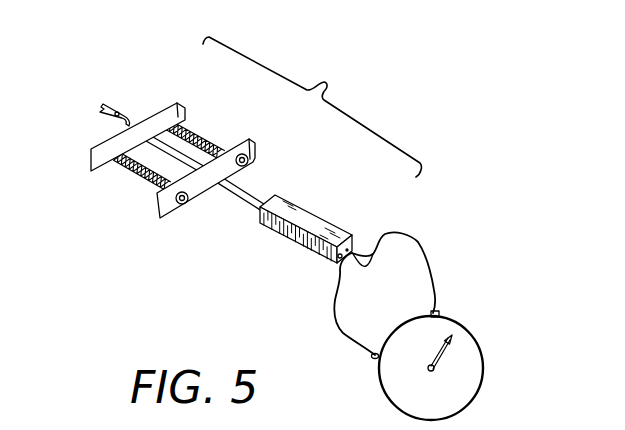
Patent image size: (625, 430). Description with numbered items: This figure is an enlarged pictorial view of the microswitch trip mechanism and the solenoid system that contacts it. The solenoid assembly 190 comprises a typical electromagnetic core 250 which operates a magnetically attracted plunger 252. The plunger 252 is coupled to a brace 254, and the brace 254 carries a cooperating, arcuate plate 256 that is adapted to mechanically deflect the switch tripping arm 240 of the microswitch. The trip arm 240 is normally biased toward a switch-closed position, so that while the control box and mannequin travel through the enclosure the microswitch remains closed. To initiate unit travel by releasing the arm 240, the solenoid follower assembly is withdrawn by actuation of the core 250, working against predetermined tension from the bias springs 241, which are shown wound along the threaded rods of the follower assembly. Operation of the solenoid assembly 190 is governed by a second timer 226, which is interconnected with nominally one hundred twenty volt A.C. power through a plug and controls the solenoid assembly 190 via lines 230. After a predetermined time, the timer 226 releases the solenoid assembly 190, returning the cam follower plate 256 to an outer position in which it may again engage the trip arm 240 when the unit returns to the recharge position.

The solenoid assembly 190 is at (312, 107).
The second timer 226 is at (472, 335).
The lines 230 is at (384, 293).
The switch tripping arm 240 is at (127, 121).
The bias springs 241 is at (227, 143).
The electromagnetic core 250 is at (310, 217).
The plunger 252 is at (250, 190).
The brace 254 is at (170, 202).
The arcuate plate 256 is at (174, 101).